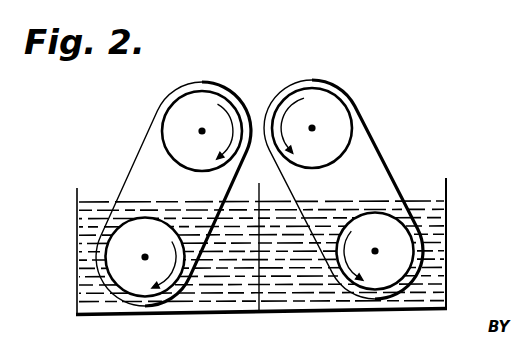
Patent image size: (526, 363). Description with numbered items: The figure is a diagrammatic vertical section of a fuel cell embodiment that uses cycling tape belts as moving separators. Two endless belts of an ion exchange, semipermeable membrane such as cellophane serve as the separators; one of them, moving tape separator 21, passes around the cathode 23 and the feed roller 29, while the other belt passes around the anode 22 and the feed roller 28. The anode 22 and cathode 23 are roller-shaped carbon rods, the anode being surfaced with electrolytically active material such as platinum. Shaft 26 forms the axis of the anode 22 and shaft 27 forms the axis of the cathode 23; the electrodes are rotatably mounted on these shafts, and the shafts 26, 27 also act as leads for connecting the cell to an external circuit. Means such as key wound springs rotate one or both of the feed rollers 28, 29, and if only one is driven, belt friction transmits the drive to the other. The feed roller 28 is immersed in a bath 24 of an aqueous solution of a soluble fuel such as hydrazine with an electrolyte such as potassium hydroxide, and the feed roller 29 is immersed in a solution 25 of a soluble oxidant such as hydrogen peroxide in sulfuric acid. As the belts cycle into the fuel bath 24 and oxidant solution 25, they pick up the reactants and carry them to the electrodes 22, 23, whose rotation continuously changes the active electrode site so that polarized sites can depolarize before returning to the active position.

The moving tape separator 21 is at (384, 152).
The anode 22 is at (177, 112).
The cathode 23 is at (343, 131).
The bath 24 is at (82, 213).
The solution 25 is at (441, 280).
The shaft 26 is at (202, 124).
The shaft 27 is at (315, 124).
The feed roller 28 is at (117, 263).
The feed roller 29 is at (385, 283).